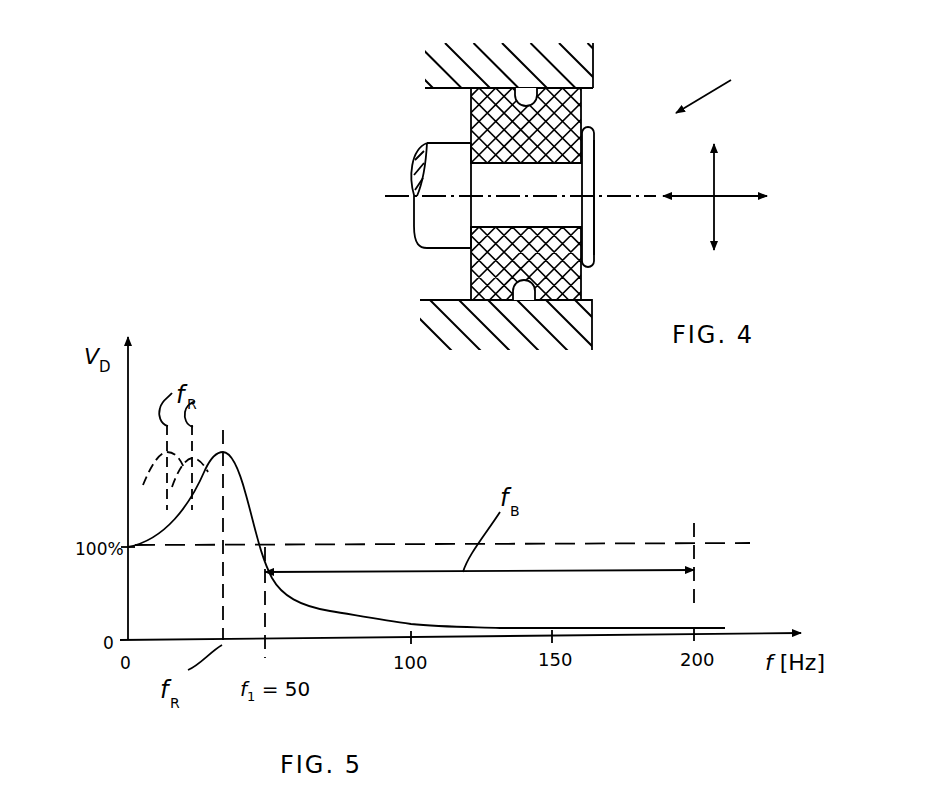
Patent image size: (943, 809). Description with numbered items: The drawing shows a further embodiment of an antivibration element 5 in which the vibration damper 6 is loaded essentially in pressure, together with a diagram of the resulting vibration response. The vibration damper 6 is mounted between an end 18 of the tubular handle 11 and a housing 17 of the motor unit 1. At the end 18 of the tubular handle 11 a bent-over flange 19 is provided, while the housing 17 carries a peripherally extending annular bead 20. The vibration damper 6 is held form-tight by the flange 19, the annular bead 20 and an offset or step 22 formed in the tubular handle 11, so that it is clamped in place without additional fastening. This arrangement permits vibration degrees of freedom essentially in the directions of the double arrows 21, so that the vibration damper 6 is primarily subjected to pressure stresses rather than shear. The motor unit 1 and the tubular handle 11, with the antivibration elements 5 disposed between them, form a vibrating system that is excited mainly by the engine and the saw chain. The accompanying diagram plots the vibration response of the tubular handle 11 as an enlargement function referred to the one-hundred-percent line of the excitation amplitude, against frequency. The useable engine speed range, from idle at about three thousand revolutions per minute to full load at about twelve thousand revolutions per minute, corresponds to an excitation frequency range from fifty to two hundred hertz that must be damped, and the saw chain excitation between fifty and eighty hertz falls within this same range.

The motor unit 1 is at (428, 65).
The antivibration element 5 is at (715, 89).
The vibration damper 6 is at (582, 104).
The tubular handle 11 is at (432, 250).
The housing 17 is at (593, 58).
The end 18 is at (595, 232).
The bent-over flange 19 is at (596, 146).
The annular bead 20 is at (527, 97).
The double arrows 21 is at (716, 175).
The offset or step 22 is at (476, 170).